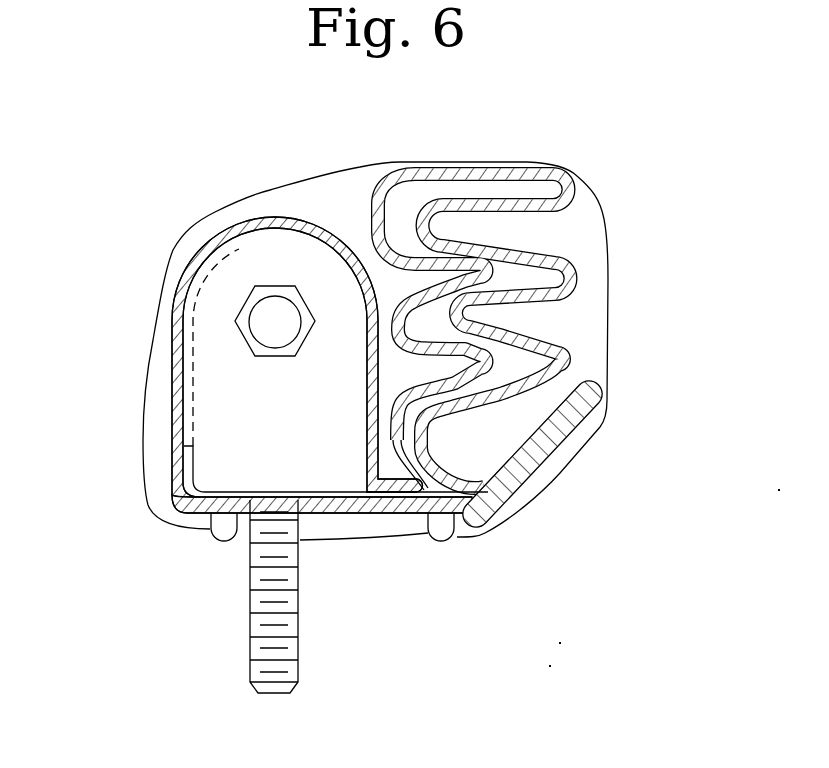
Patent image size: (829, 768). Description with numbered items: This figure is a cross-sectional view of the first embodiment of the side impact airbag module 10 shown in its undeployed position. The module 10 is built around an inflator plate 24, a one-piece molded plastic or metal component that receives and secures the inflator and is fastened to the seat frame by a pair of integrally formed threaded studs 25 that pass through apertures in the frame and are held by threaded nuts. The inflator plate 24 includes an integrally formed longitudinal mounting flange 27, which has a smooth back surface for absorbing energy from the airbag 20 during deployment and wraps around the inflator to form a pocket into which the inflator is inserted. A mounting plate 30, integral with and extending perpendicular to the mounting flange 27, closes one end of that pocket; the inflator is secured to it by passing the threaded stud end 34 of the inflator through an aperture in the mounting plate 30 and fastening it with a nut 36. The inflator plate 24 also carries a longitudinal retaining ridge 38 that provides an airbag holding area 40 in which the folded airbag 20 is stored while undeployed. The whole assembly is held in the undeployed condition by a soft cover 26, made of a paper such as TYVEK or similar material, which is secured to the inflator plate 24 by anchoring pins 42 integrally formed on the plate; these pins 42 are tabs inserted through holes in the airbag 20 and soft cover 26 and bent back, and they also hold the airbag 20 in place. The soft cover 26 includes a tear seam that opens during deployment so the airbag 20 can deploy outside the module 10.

The side impact airbag module 10 is at (627, 177).
The airbag 20 is at (572, 303).
The inflator plate 24 is at (458, 500).
The threaded studs 25 is at (248, 630).
The soft cover 26 is at (247, 197).
The longitudinal mounting flange 27 is at (220, 255).
The mounting plate 30 is at (320, 265).
The threaded stud end 34 is at (277, 320).
The nut 36 is at (236, 322).
The longitudinal retaining ridge 38 is at (577, 410).
The airbag holding area 40 is at (566, 468).
The anchoring pins 42 is at (226, 545).